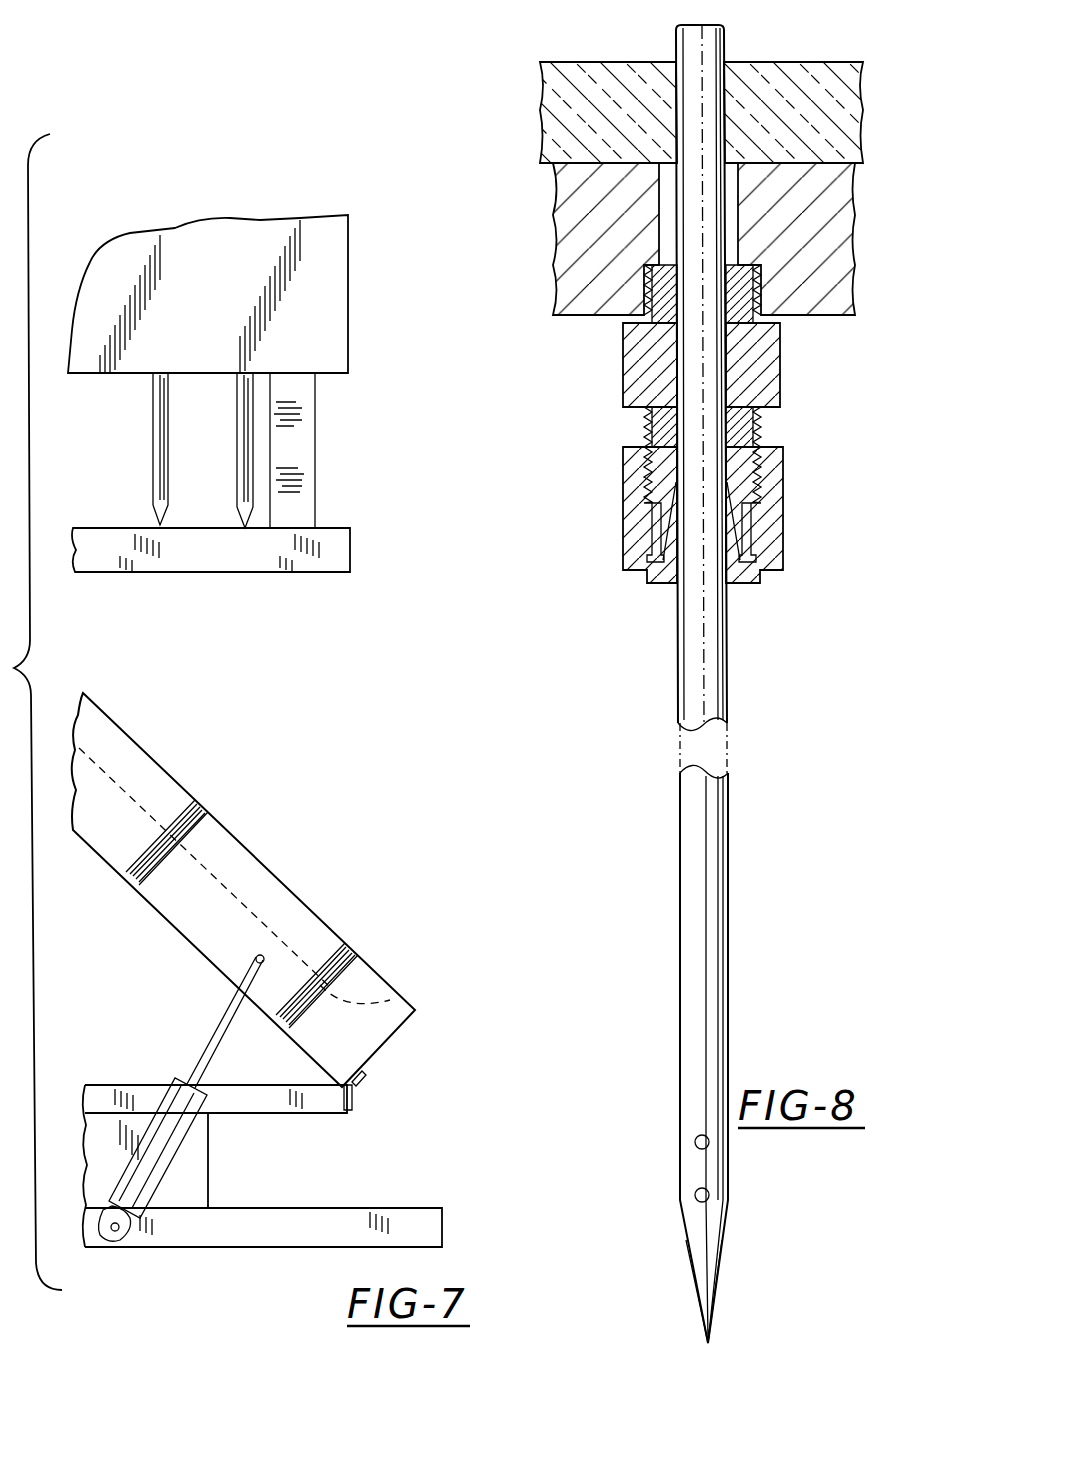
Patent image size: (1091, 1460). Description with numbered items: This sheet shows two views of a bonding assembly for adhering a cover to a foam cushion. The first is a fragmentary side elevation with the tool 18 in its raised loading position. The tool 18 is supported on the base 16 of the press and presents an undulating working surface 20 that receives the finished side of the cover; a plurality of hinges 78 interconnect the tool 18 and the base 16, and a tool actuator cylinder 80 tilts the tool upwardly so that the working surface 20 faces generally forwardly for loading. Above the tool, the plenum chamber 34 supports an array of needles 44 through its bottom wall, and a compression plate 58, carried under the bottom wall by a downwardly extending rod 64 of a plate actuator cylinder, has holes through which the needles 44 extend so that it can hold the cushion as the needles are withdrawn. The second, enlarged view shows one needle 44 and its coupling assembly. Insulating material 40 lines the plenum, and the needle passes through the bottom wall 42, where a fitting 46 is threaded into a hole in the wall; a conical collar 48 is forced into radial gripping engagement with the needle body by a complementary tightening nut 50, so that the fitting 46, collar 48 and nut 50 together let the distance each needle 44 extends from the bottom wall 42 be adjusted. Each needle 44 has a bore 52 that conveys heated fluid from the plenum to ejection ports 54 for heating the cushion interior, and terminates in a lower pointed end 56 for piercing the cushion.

In FIG. 7, the base 16 is at (443, 1225).
In FIG. 7, the tool 18 is at (393, 1032).
In FIG. 7, the working surface 20 is at (257, 910).
In FIG. 7, the plenum chamber 34 is at (340, 305).
In FIG. 8, the insulating material 40 is at (800, 75).
In FIG. 8, the bottom wall 42 is at (555, 190).
In FIG. 7, the needle 44 is at (242, 437).
In FIG. 8, the needle 44 is at (715, 692).
In FIG. 8, the fitting 46 is at (632, 360).
In FIG. 8, the conical collar 48 is at (767, 530).
In FIG. 8, the tightening nut 50 is at (777, 550).
In FIG. 8, the bore 52 is at (702, 765).
In FIG. 8, the ejection ports 54 is at (695, 1196).
In FIG. 8, the lower pointed end 56 is at (710, 1348).
In FIG. 7, the compression plate 58 is at (342, 547).
In FIG. 7, the rod 64 is at (302, 447).
In FIG. 7, the hinges 78 is at (352, 1093).
In FIG. 7, the tool actuator cylinder 80 is at (147, 1218).